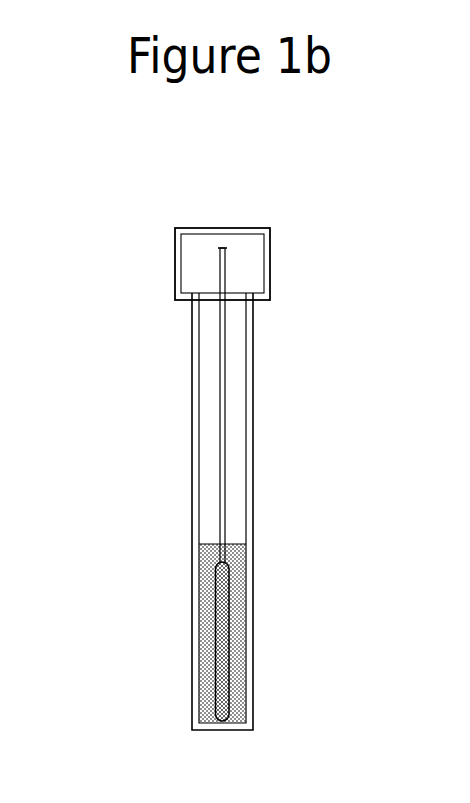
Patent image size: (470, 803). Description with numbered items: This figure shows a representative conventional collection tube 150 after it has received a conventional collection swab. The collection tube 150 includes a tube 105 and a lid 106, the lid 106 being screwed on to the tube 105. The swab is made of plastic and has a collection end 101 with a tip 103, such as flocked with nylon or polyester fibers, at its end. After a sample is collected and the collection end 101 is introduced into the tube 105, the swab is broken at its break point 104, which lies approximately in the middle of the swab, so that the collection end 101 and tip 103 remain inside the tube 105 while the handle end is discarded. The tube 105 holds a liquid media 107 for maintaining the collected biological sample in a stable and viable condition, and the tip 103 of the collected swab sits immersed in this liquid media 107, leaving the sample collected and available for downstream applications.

The conventional collection tube 150 is at (286, 434).
The lid 106 is at (272, 265).
The break point 104 is at (226, 247).
The collection end 101 is at (225, 397).
The tube 105 is at (253, 475).
The liquid media 107 is at (238, 545).
The tip 103 is at (229, 653).